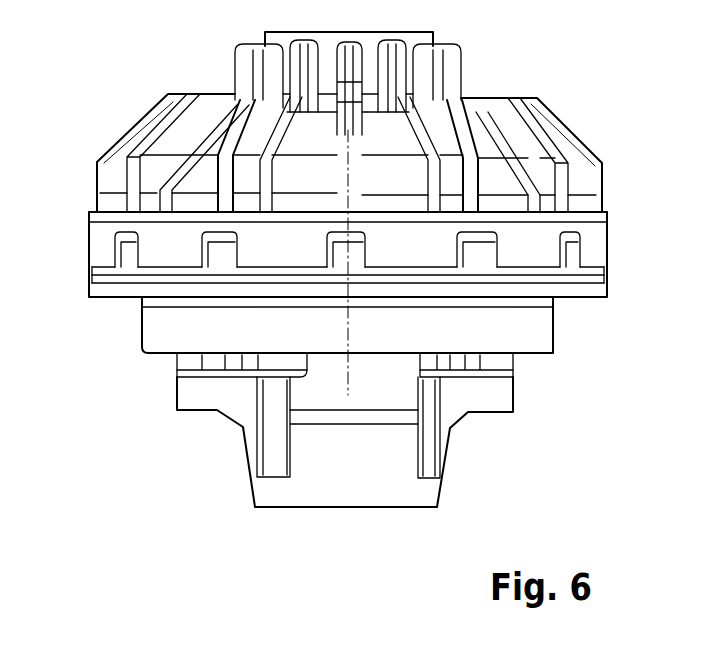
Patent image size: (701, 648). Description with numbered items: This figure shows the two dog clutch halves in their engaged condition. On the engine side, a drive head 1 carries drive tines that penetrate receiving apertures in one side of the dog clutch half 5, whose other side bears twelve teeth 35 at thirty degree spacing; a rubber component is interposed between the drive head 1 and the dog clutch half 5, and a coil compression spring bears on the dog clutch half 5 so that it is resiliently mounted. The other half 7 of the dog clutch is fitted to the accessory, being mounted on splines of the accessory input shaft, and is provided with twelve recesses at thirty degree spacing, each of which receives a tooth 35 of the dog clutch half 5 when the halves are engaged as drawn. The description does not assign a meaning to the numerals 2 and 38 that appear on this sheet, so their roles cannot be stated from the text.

The drive head 1 is at (212, 392).
The ring 2 is at (188, 365).
The dog clutch half 5 is at (160, 327).
The dog clutch half 7 is at (112, 165).
The teeth 35 is at (474, 269).
The tab 38 is at (577, 238).